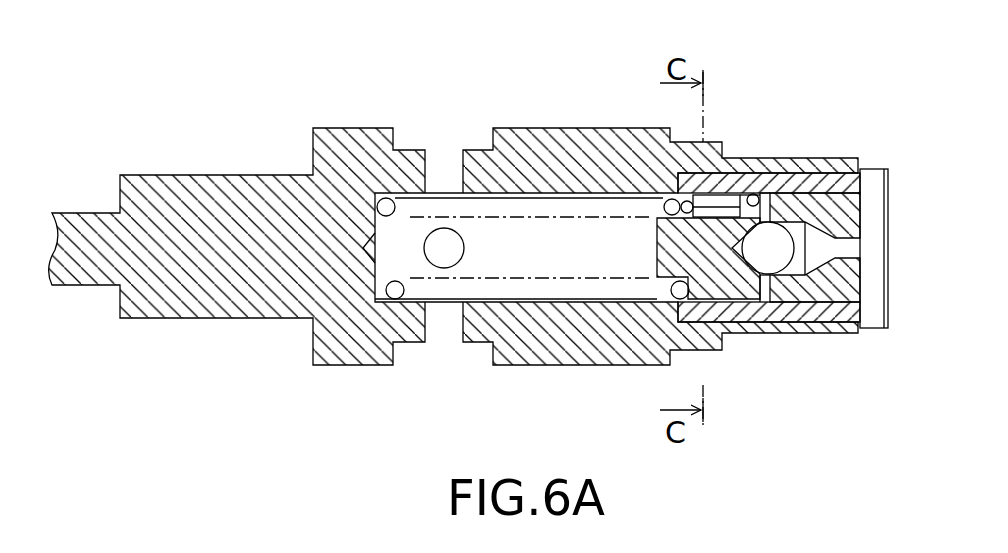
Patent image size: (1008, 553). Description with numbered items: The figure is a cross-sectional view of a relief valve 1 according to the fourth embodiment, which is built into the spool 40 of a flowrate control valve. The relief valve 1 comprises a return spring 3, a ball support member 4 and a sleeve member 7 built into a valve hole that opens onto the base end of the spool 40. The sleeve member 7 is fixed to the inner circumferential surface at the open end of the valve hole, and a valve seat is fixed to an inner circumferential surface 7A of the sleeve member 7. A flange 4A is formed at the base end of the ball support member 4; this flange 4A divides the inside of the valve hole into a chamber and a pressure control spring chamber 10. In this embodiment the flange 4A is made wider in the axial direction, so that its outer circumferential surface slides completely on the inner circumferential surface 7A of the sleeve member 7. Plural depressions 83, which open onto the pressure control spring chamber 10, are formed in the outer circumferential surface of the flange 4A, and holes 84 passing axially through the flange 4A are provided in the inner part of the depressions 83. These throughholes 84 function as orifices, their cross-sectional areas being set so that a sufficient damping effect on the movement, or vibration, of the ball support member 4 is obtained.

The relief valve 1 is at (420, 133).
The return spring 3 is at (540, 295).
The ball support member 4 is at (657, 243).
The flange 4A is at (737, 302).
The sleeve member 7 is at (835, 307).
The inner circumferential surface 7A is at (655, 232).
The pressure control spring chamber 10 is at (473, 265).
The spool 40 is at (185, 318).
The depressions 83 is at (690, 215).
The throughholes 84 is at (760, 203).